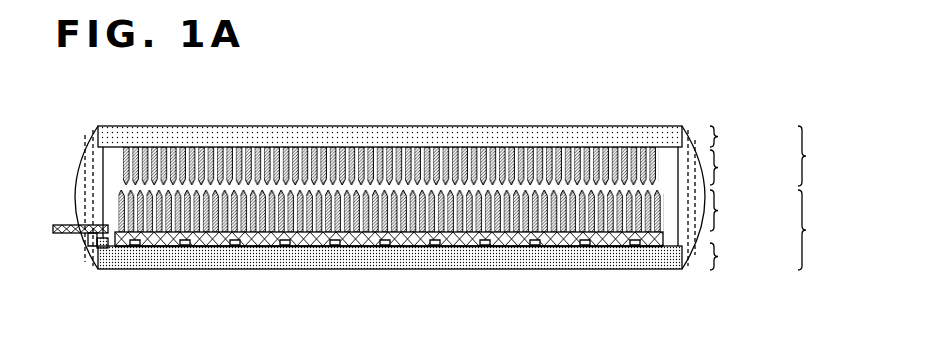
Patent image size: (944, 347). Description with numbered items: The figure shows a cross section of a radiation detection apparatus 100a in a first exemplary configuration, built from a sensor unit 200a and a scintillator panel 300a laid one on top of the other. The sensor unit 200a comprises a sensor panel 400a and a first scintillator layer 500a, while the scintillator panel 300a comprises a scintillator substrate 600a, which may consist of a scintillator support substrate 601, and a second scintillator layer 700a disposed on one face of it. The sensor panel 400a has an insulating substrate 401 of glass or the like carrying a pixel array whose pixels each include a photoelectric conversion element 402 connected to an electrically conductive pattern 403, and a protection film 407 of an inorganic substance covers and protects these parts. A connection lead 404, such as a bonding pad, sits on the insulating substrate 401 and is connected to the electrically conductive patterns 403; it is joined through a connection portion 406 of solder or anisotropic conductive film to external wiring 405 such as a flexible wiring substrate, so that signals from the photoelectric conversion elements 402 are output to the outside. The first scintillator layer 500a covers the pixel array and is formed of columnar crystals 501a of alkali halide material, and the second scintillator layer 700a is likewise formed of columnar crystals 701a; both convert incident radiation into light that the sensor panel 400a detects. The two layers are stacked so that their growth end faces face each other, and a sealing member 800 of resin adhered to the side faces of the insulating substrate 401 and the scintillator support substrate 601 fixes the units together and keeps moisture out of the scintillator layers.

The radiation detection apparatus 100a is at (283, 108).
The sealing member 800 is at (97, 131).
The scintillator panel 300a is at (483, 154).
The scintillator substrate 600a is at (440, 105).
The scintillator support substrate 601 is at (483, 137).
The second scintillator layer 700a is at (453, 126).
The columnar crystals 701a is at (587, 150).
The sensor unit 200a is at (453, 261).
The first scintillator layer 500a is at (450, 254).
The columnar crystals 501a is at (585, 238).
The sensor panel 400a is at (410, 279).
The insulating substrate 401 is at (535, 258).
The photoelectric conversion element 402 is at (442, 243).
The electrically conductive pattern 403 is at (340, 245).
The connection lead 404 is at (101, 248).
The external wiring 405 is at (92, 246).
The connection portion 406 is at (70, 235).
The protection film 407 is at (280, 248).